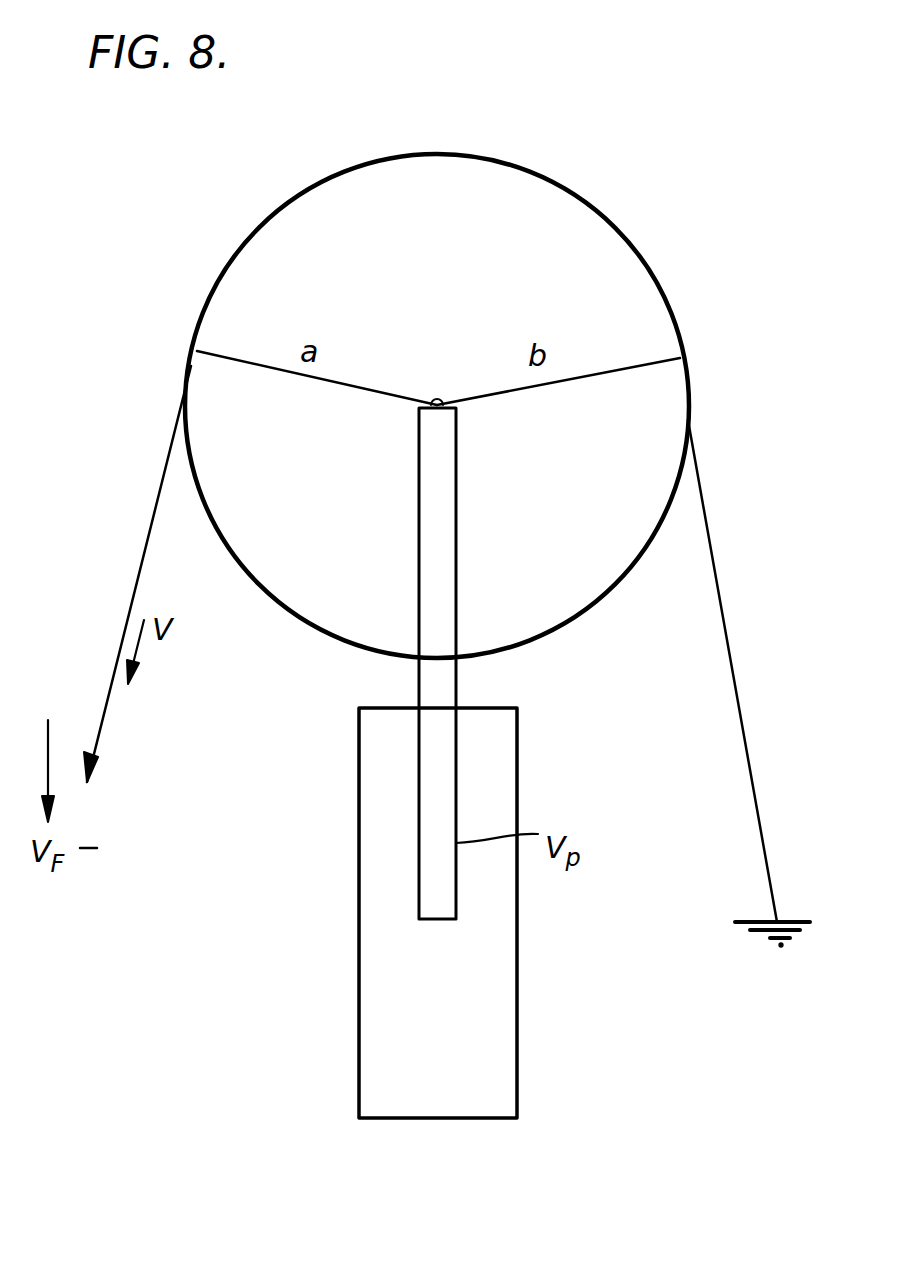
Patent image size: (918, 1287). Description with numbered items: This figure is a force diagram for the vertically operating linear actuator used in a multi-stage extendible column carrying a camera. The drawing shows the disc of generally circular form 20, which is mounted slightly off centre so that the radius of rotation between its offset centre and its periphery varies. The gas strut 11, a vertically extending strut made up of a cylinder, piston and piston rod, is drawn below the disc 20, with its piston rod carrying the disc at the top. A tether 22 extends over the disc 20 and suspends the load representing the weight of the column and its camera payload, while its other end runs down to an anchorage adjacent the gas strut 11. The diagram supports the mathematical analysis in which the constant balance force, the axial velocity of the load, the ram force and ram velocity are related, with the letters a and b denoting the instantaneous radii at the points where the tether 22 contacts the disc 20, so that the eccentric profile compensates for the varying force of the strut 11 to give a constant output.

The disk 20 is at (286, 252).
The tether 22 is at (148, 523).
The gas strut 11 is at (376, 998).